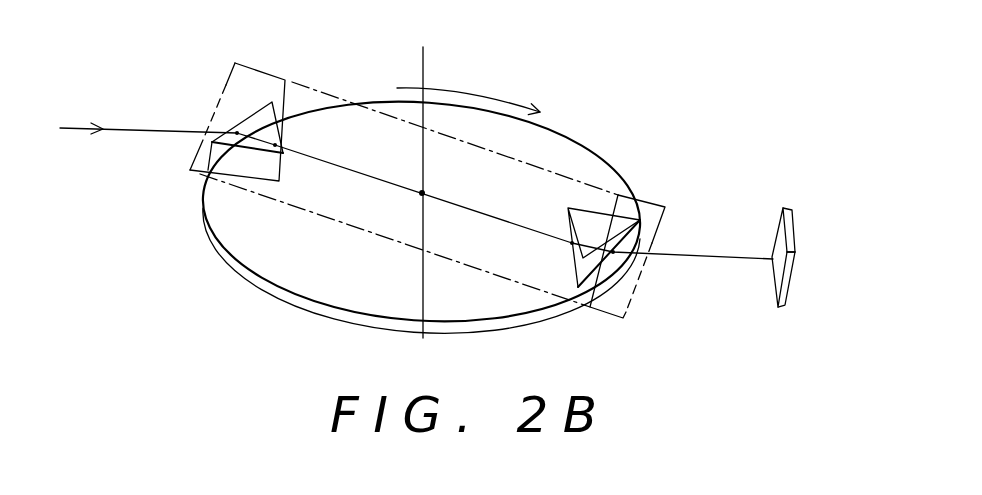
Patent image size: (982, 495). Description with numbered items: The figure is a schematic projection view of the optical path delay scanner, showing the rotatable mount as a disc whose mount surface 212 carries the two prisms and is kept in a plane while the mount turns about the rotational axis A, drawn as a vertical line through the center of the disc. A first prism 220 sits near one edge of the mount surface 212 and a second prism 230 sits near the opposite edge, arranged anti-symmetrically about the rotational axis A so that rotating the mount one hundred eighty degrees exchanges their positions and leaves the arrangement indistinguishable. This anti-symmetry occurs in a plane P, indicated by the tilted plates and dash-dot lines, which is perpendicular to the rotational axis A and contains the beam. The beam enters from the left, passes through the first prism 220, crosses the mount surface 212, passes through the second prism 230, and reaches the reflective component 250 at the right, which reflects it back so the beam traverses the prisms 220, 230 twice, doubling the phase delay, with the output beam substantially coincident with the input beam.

The mount surface 212 is at (557, 158).
The first prism 220 is at (242, 120).
The second prism 230 is at (630, 197).
The reflective component 250 is at (785, 207).
The rotational axis A is at (427, 66).
The plane P is at (253, 84).